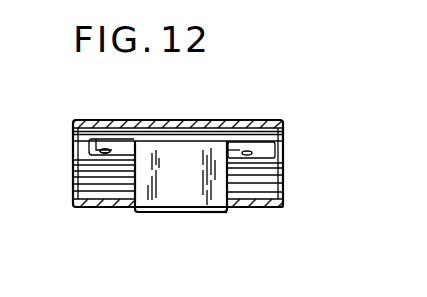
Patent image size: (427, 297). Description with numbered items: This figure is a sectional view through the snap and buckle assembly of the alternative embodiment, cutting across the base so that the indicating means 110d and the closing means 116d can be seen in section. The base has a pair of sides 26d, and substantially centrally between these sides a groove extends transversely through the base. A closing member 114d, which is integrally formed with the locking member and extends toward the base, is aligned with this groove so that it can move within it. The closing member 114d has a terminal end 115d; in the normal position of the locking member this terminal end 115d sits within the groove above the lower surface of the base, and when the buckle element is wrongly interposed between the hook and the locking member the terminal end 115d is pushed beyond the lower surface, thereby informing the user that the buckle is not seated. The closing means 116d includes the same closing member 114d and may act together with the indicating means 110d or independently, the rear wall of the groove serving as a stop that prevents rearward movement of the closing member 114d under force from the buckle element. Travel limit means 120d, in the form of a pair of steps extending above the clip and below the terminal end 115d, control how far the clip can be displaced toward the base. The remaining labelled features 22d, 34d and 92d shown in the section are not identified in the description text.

The body 22d is at (85, 187).
The housing top wall 34d is at (73, 118).
The sides of base 26d is at (281, 206).
The recess 92d is at (273, 157).
The travel limit means 120d is at (124, 147).
The indicating means 110d is at (170, 214).
The closing member 114d is at (173, 163).
The closing means 116d is at (196, 158).
The terminal end 115d is at (217, 215).